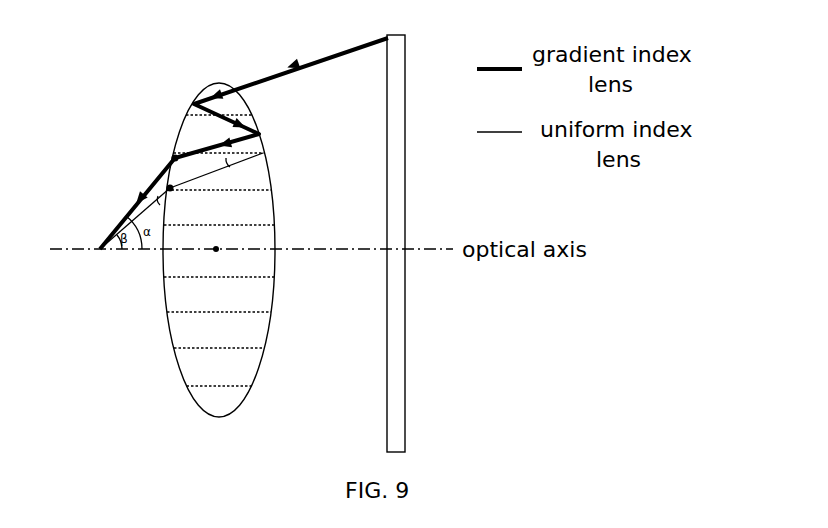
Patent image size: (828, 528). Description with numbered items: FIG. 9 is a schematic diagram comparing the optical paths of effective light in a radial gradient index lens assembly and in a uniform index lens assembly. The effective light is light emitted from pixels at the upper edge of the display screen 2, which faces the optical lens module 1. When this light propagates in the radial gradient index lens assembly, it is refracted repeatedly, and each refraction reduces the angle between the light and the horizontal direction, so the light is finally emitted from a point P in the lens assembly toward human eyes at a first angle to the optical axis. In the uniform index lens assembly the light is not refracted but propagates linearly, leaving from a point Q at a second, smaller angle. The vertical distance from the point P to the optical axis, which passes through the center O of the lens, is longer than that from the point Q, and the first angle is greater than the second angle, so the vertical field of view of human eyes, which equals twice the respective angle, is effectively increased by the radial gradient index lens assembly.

The optical lens module 1 is at (273, 207).
The display screen 2 is at (405, 63).
The point P is at (164, 158).
The point Q is at (178, 201).
The lens center O is at (225, 260).